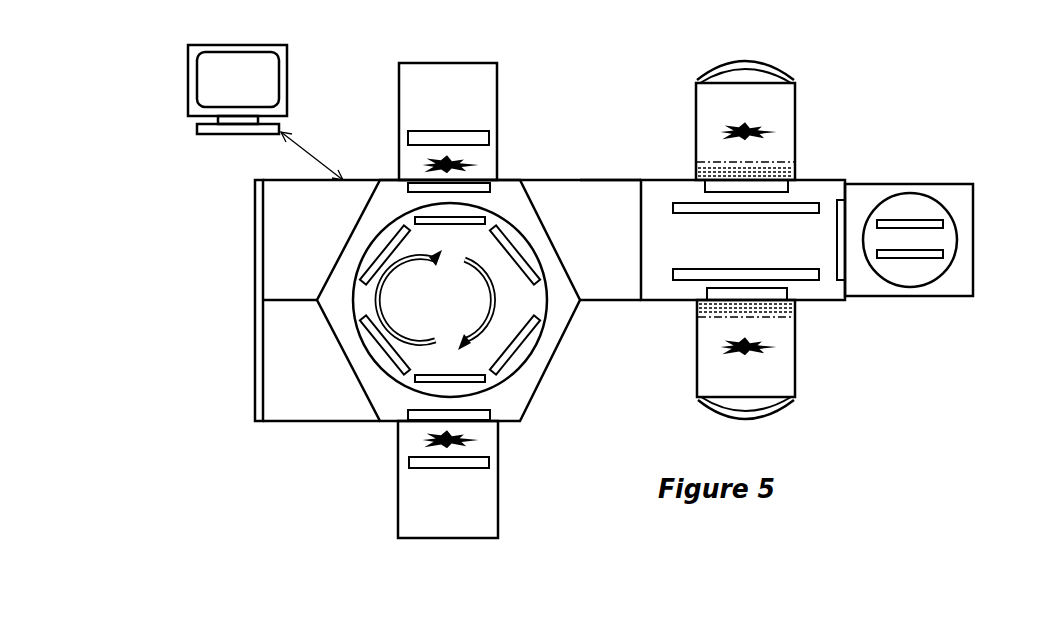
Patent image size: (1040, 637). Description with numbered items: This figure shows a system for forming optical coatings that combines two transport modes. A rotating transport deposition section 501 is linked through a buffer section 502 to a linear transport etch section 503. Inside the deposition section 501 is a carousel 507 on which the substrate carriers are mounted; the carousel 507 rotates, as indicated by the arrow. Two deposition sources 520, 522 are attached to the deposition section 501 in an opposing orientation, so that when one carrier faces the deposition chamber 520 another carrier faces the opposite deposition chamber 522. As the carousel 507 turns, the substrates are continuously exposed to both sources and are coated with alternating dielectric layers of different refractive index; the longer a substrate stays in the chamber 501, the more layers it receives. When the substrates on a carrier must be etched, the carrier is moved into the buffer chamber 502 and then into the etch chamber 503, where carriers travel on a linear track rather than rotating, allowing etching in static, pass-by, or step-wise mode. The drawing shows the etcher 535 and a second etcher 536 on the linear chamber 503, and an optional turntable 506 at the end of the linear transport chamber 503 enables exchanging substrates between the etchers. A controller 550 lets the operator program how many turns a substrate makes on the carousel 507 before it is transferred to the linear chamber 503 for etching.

The rotating transport deposition section 501 is at (505, 178).
The buffer section 502 is at (572, 178).
The linear transport etch section 503 is at (828, 178).
The turntable 506 is at (912, 283).
The carousel 507 is at (526, 358).
The deposition source 520 is at (500, 87).
The deposition source 522 is at (500, 500).
The etcher 535 is at (788, 120).
The lower source cylinder 536 is at (797, 390).
The controller 550 is at (220, 89).